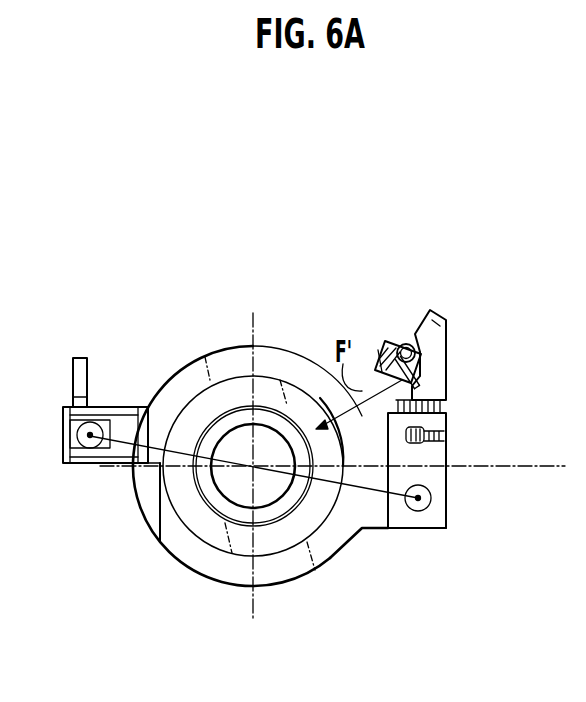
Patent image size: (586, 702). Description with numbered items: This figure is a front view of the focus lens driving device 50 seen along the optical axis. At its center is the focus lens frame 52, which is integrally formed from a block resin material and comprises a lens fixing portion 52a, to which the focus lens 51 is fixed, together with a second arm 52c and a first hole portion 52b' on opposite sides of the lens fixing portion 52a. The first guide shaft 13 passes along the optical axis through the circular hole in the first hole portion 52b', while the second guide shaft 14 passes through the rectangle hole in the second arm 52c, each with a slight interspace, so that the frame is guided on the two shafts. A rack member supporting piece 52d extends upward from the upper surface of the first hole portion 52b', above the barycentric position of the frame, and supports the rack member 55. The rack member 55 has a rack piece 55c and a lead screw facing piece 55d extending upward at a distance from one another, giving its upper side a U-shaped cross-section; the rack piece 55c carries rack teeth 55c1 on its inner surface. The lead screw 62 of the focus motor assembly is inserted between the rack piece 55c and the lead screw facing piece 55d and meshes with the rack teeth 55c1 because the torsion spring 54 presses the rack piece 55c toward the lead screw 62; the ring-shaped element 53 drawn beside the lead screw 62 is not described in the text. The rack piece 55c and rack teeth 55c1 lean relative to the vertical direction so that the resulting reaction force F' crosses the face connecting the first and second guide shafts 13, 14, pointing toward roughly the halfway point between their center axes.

The focus lens driving device 50 is at (326, 270).
The focus lens frame 52 is at (223, 348).
The lens fixing portion 52a is at (278, 362).
The second arm 52c is at (122, 415).
The rack member supporting piece 52d is at (437, 453).
The first hole portion 52b' is at (404, 566).
The focus lens 51 is at (212, 490).
The first guide shaft 13 is at (432, 492).
The second guide shaft 14 is at (90, 440).
The rack member 55 is at (442, 314).
The rack piece 55c is at (380, 350).
The rack teeth 55c1 is at (425, 371).
The lead screw facing piece 55d is at (437, 337).
The lead screw 62 is at (378, 352).
The pivot ring 53 is at (409, 343).
The torsion spring 54 is at (394, 392).